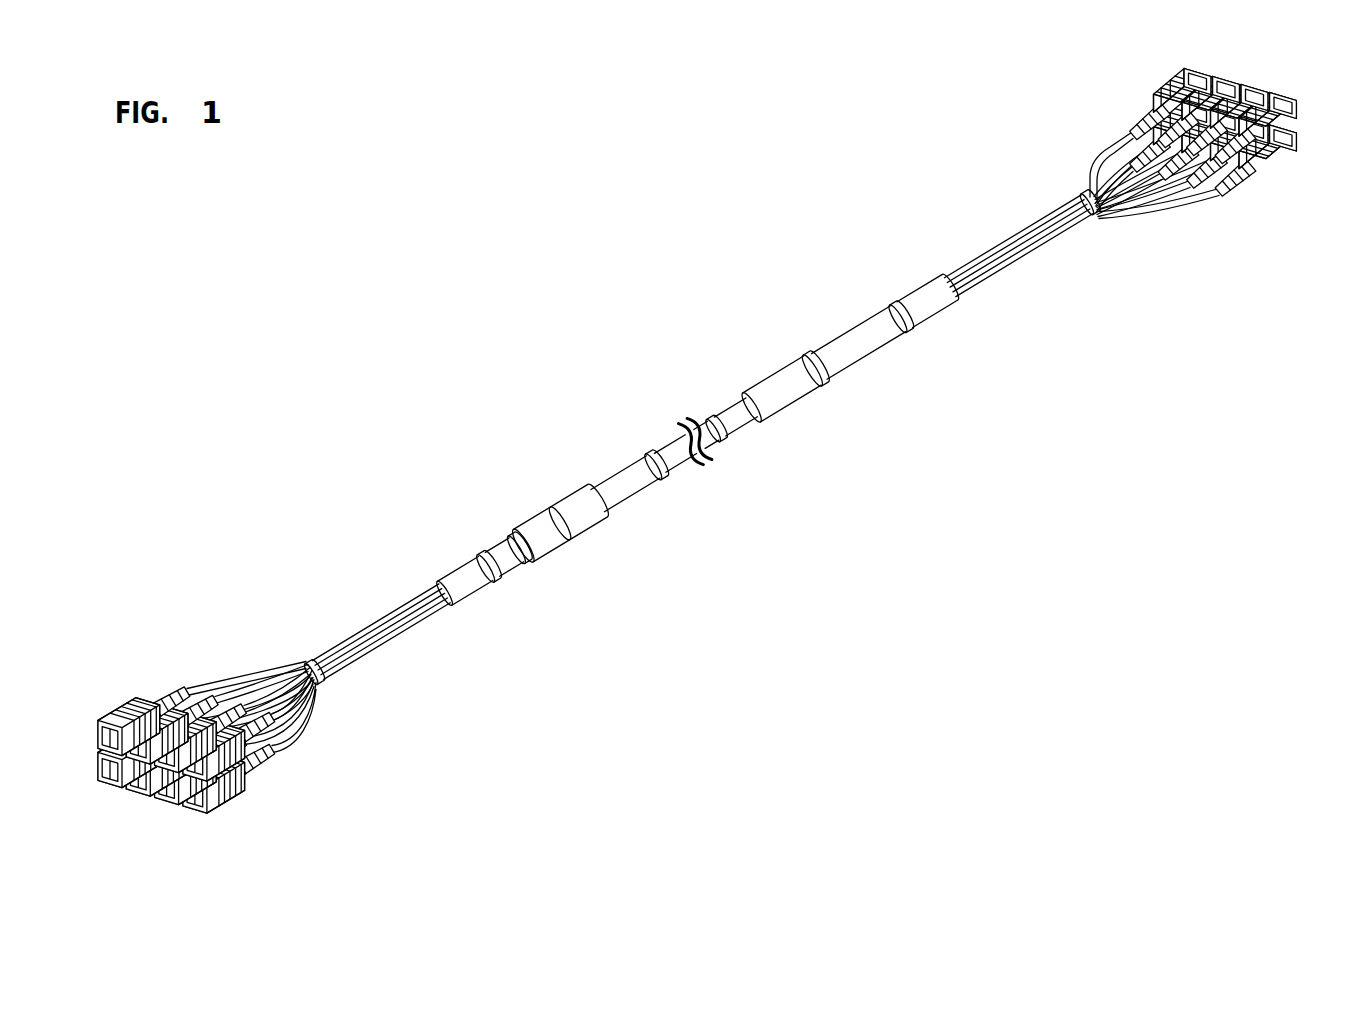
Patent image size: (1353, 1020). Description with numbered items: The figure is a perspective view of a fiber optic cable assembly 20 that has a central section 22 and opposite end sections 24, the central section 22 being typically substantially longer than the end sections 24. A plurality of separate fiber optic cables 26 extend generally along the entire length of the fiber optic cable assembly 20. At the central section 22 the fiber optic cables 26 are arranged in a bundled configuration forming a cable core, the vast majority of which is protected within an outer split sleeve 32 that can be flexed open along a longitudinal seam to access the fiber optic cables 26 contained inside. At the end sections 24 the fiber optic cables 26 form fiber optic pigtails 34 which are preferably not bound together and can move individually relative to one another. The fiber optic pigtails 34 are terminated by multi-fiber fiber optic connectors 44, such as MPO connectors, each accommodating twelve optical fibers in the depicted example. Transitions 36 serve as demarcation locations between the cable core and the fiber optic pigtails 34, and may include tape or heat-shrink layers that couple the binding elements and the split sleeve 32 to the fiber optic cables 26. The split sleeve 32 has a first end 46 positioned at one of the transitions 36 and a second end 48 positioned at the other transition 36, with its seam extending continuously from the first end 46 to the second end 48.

The fiber optic cable assembly 20 is at (464, 260).
The central section 22 is at (627, 390).
The end sections 24 is at (297, 780).
The fiber optic cables 26 is at (307, 718).
The split sleeve 32 is at (627, 497).
The fiber optic pigtails 34 is at (223, 683).
The transitions 36 is at (513, 512).
The multi-fiber fiber optic connectors 44 is at (225, 780).
The first end 46 is at (517, 558).
The second end 48 is at (905, 333).